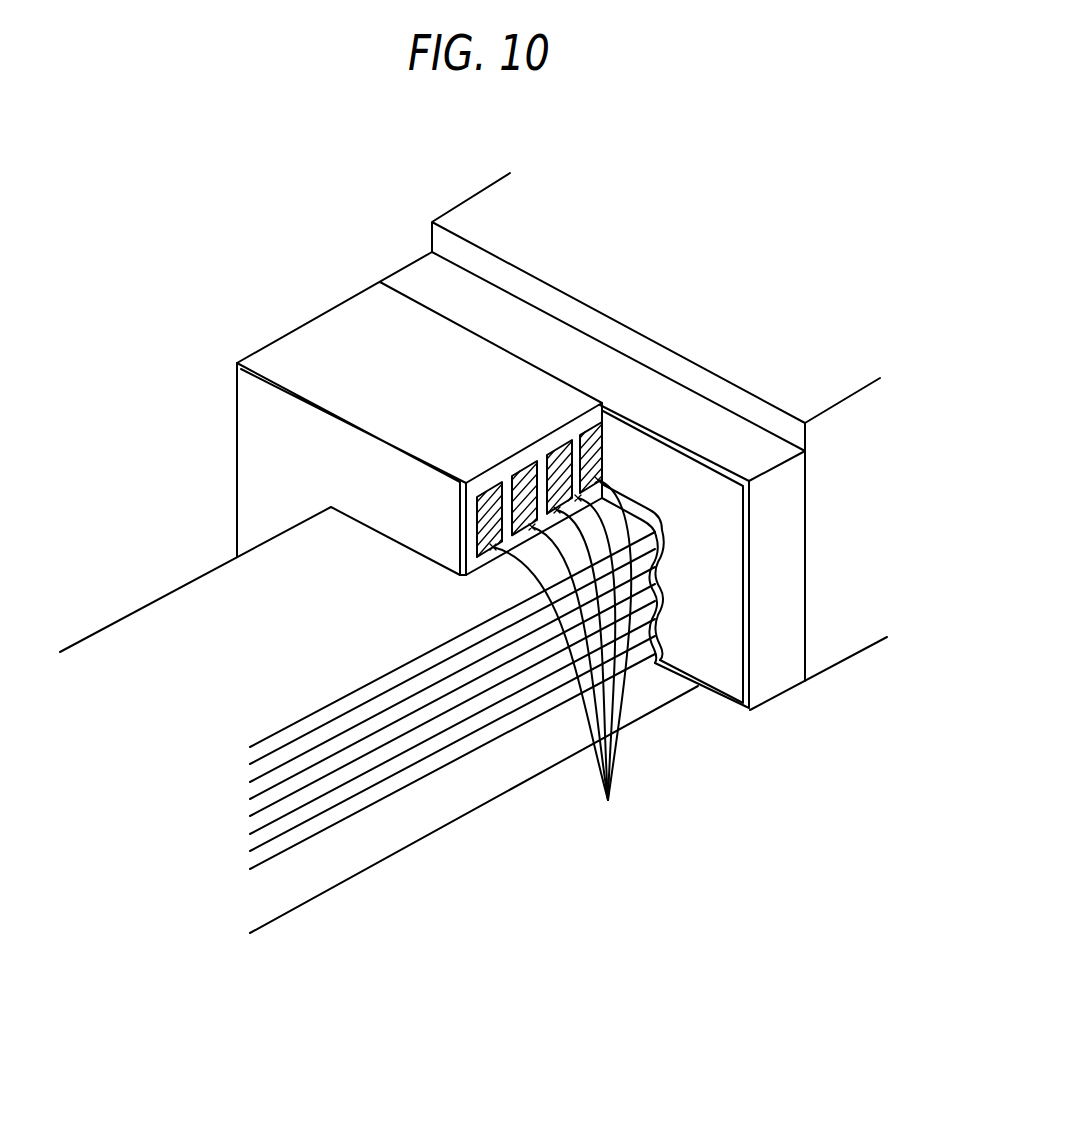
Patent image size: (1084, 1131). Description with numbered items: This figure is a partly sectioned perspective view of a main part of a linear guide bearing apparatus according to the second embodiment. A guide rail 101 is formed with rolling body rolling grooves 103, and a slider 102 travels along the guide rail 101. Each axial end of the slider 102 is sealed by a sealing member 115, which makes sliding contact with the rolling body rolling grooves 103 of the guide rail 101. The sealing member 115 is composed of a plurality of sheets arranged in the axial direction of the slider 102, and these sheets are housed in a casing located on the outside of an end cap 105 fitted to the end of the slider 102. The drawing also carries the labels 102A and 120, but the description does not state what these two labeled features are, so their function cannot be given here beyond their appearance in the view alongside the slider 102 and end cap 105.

The guide rail 101 is at (478, 777).
The slider 102 is at (512, 223).
The side surface of support member 102A is at (837, 615).
The rolling body rolling grooves 103 is at (385, 732).
The end cap 105 is at (787, 652).
The sealing member 115 is at (562, 655).
The element chip 120 is at (368, 353).